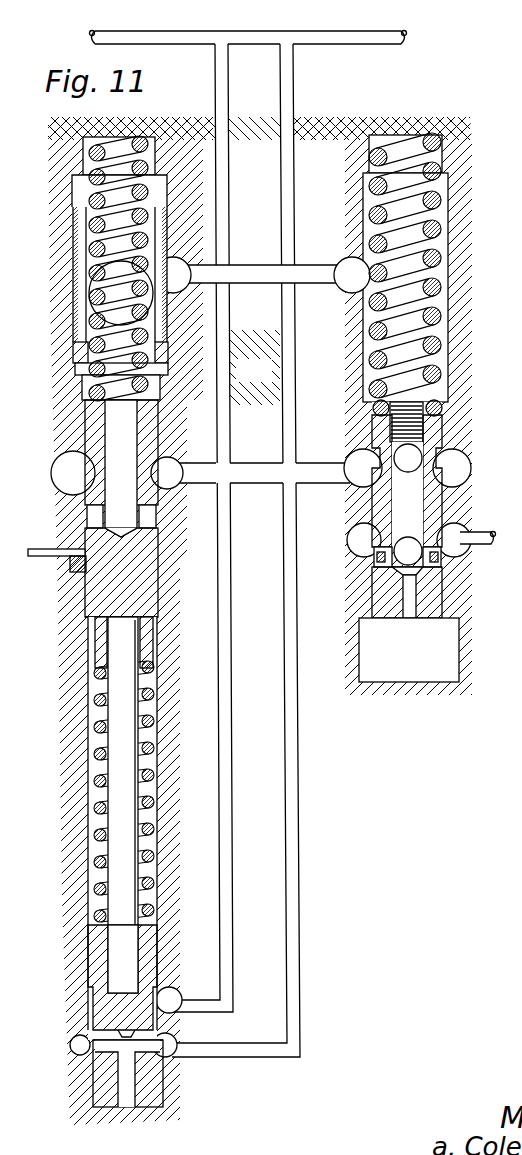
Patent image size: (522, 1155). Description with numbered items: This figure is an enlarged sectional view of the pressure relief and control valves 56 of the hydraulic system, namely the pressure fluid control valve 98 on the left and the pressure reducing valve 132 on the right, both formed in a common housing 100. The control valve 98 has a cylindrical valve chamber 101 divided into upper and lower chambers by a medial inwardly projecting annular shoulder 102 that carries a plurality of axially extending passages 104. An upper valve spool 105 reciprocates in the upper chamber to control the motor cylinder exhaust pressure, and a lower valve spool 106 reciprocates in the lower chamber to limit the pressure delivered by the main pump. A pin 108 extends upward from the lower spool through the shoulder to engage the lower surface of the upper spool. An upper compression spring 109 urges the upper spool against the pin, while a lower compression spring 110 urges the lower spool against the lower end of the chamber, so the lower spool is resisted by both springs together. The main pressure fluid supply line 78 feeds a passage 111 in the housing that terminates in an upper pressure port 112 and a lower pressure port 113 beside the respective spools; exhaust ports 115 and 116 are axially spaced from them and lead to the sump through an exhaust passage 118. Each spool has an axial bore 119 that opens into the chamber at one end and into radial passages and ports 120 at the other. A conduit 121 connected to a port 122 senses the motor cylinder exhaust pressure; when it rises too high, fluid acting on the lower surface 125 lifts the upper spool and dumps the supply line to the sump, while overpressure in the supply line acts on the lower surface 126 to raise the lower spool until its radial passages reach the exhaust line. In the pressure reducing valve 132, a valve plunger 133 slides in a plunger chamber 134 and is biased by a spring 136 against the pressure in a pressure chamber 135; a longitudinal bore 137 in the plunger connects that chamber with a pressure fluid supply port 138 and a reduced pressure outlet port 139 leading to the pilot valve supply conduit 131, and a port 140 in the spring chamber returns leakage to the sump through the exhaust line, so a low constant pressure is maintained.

The pressure relief and control valves 56 is at (272, 380).
The main pressure fluid supply line 78 is at (396, 44).
The pressure fluid control valve 98 is at (62, 725).
The housing 100 is at (163, 142).
The cylindrical valve chamber 101 is at (92, 420).
The annular shoulder 102 is at (155, 657).
The axially extending passages 104 is at (157, 640).
The upper valve spool 105 is at (152, 560).
The lower valve spool 106 is at (152, 950).
The pin 108 is at (132, 853).
The upper compression spring 109 is at (90, 252).
The lower compression spring 110 is at (147, 808).
The passage 111 is at (293, 122).
The upper pressure port 112 is at (168, 462).
The lower pressure port 113 is at (174, 1056).
The upper exhaust port 115 is at (177, 266).
The lower exhaust port 116 is at (170, 1000).
The exhaust passage 118 is at (230, 212).
The axial bore 119 is at (128, 444).
The radial passages and ports 120 is at (152, 513).
The conduit 121 is at (38, 553).
The port 122 is at (70, 560).
The lower surface of upper valve spool 125 is at (158, 620).
The lower surface of lower valve spool 126 is at (158, 1105).
The pilot valve supply conduit 131 is at (481, 540).
The pressure reducing valve 132 is at (356, 582).
The valve plunger 133 is at (458, 500).
The plunger chamber 134 is at (445, 603).
The pressure chamber 135 is at (410, 665).
The spring 136 is at (448, 322).
The longitudinal bore 137 is at (398, 508).
The pressure fluid supply port 138 is at (356, 458).
The reduced pressure fluid supply outlet port 139 is at (466, 530).
The port 140 is at (345, 268).